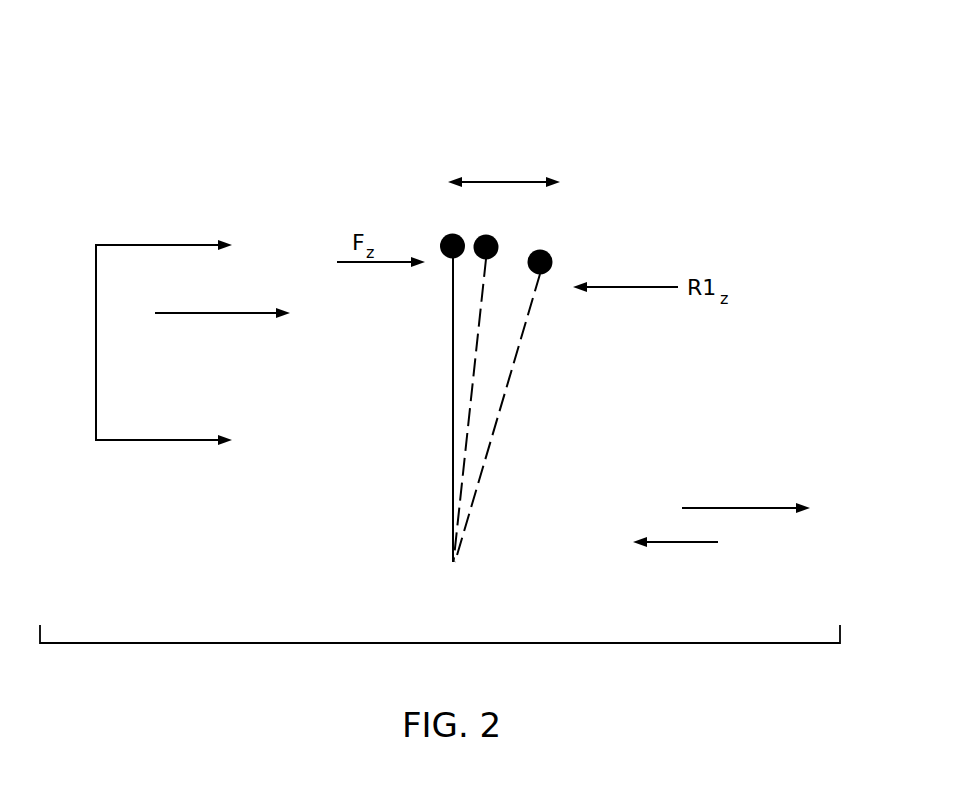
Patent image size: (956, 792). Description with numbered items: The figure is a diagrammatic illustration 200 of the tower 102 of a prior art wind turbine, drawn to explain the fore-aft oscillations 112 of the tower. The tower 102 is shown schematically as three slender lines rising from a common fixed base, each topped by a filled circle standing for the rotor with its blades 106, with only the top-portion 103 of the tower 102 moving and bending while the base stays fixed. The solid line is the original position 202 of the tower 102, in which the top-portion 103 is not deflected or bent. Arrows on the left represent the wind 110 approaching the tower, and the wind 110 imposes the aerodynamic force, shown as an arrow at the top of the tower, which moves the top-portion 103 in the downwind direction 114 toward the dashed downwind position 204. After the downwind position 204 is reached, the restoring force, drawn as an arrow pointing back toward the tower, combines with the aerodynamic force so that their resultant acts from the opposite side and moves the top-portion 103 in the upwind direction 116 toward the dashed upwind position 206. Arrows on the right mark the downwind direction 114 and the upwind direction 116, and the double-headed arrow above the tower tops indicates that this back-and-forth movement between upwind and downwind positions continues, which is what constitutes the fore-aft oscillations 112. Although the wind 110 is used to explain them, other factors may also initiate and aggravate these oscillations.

The diagrammatic illustration 200 is at (676, 47).
The tower 102 is at (485, 410).
The top-portion of the tower 103 is at (94, 365).
The blades 106 is at (448, 234).
The wind 110 is at (247, 317).
The fore-aft oscillations 112 is at (503, 180).
The downwind direction 114 is at (737, 506).
The upwind direction 116 is at (700, 545).
The original position 202 is at (452, 420).
The downwind position 204 is at (531, 292).
The upwind position 206 is at (470, 348).